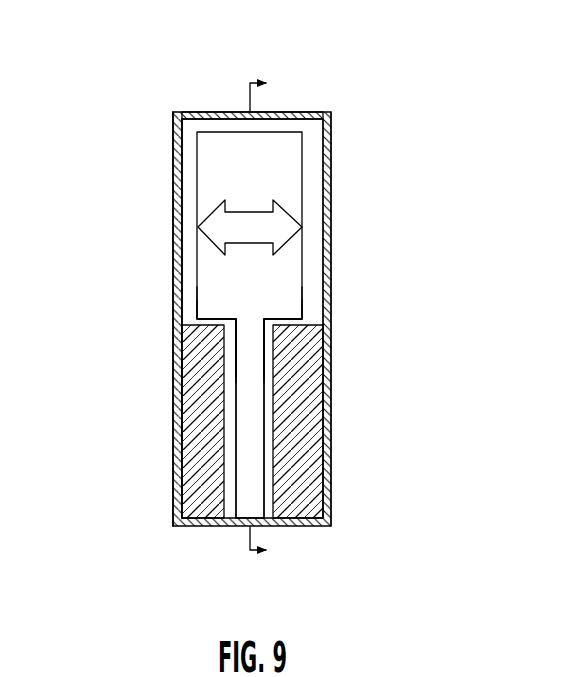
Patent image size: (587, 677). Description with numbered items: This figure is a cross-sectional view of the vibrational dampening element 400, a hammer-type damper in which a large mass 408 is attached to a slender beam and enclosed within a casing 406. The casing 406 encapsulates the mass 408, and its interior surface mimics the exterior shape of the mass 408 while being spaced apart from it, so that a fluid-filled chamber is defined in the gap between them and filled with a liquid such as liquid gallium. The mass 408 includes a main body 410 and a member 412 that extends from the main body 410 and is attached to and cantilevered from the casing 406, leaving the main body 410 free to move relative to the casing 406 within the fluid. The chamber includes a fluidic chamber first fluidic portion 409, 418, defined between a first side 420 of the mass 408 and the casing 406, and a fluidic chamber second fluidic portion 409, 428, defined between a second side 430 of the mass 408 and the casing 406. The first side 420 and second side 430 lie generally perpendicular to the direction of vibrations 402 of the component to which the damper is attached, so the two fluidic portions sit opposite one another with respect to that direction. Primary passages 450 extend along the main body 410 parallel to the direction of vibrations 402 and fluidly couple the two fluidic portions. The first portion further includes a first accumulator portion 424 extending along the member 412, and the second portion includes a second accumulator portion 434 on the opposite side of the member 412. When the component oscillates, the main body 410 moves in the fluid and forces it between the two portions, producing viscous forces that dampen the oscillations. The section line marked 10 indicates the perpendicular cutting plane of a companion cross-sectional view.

The vibrational dampening element 400 is at (79, 71).
The direction of vibrations 402 is at (241, 208).
The casing 406 is at (329, 112).
The mass 408 is at (180, 118).
The first side wall 409, 418 is at (178, 274).
The second side wall 409, 428 is at (320, 256).
The main body 410 is at (204, 185).
The member 412 is at (253, 420).
The first side 420 is at (236, 383).
The first accumulator portion 424 is at (218, 443).
The second side 430 is at (266, 377).
The second accumulator portion 434 is at (282, 470).
The primary passages 450 is at (298, 117).
The section line 10 is at (277, 319).